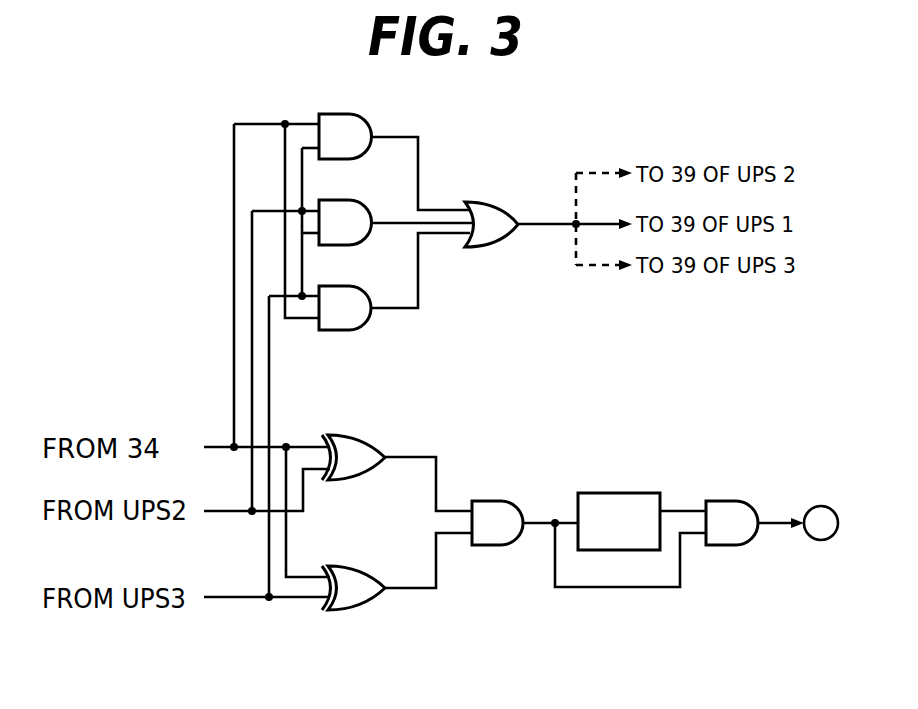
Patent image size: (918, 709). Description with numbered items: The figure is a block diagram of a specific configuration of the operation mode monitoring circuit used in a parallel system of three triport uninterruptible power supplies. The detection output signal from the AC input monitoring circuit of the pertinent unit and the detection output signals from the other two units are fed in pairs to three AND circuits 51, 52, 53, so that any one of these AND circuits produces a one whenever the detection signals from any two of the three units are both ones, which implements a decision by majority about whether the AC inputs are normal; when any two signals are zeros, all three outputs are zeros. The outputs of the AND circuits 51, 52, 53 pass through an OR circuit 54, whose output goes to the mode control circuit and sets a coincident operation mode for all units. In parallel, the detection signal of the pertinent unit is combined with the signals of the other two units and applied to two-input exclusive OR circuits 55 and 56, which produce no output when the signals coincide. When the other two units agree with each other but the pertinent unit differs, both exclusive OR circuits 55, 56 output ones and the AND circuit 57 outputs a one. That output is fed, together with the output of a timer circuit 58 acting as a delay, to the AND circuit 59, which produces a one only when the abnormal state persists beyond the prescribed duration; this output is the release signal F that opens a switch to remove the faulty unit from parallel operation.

The AND circuit 51 is at (367, 120).
The AND circuit 52 is at (344, 199).
The AND circuit 53 is at (344, 287).
The OR circuit 54 is at (500, 203).
The exclusive OR circuit 55 is at (357, 433).
The exclusive OR circuit 56 is at (357, 567).
The AND circuit 57 is at (500, 500).
The timer circuit 58 is at (607, 493).
The AND circuit 59 is at (734, 500).